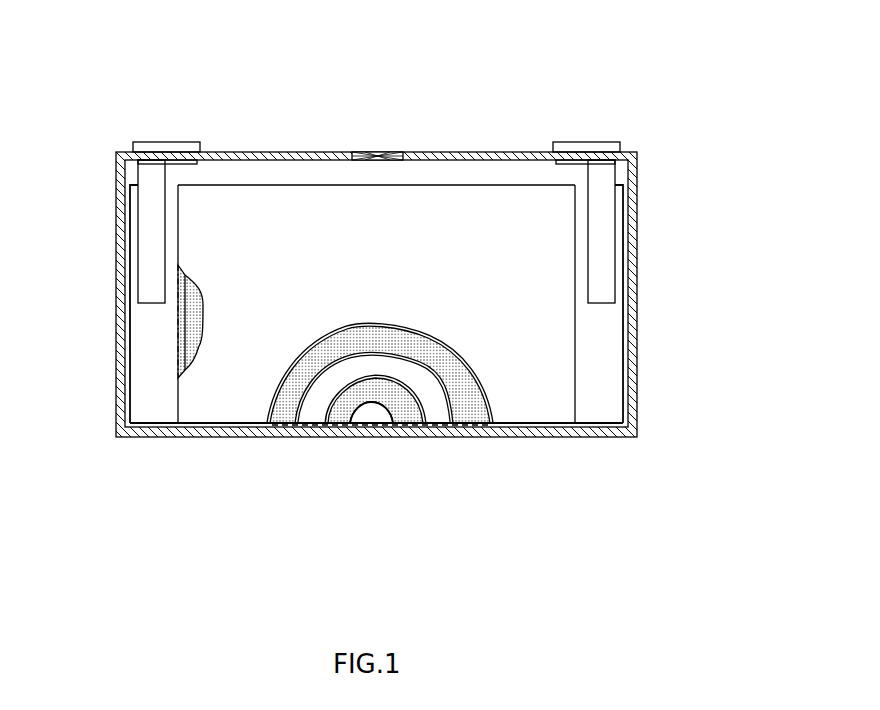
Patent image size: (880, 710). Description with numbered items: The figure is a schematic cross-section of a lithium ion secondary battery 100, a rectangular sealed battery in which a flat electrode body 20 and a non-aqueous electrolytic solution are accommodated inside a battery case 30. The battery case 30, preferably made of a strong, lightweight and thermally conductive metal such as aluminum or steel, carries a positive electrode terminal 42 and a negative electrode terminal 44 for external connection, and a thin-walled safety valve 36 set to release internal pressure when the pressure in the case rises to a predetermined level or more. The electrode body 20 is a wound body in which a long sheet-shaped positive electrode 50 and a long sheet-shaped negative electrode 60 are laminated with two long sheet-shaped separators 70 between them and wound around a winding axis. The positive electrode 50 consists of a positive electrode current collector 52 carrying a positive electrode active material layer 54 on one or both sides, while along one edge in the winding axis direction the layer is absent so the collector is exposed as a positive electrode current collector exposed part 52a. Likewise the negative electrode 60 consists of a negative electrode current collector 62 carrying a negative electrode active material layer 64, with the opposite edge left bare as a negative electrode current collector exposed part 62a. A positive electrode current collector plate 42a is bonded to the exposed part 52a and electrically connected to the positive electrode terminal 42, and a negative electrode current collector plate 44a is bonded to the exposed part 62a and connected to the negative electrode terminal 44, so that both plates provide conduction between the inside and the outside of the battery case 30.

The lithium ion secondary battery 100 is at (656, 78).
The electrode body 20 is at (299, 182).
The battery case 30 is at (642, 258).
The safety valve 36 is at (385, 152).
The positive electrode terminal 42 is at (180, 142).
The positive electrode current collector plate 42a is at (152, 224).
The negative electrode terminal 44 is at (598, 142).
The negative electrode current collector plate 44a is at (605, 218).
The positive electrode 50 is at (287, 412).
The positive electrode current collector 52 is at (128, 325).
The positive electrode current collector exposed part 52a is at (143, 397).
The positive electrode active material layer 54 is at (205, 300).
The negative electrode 60 is at (343, 408).
The negative electrode current collector 62 is at (627, 326).
The negative electrode current collector exposed part 62a is at (606, 392).
The negative electrode active material layer 64 is at (361, 466).
The separator 70 is at (221, 372).